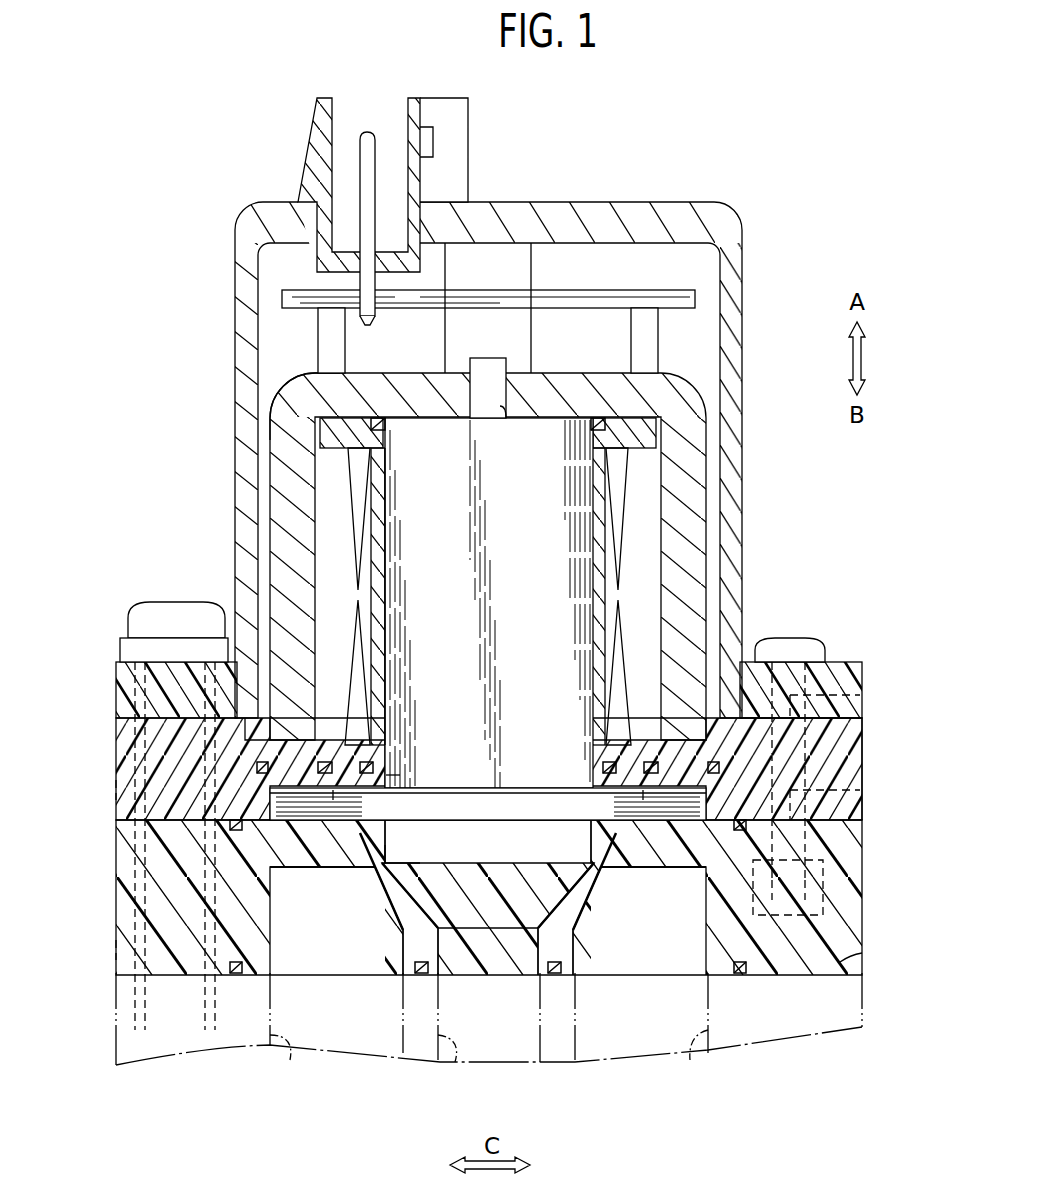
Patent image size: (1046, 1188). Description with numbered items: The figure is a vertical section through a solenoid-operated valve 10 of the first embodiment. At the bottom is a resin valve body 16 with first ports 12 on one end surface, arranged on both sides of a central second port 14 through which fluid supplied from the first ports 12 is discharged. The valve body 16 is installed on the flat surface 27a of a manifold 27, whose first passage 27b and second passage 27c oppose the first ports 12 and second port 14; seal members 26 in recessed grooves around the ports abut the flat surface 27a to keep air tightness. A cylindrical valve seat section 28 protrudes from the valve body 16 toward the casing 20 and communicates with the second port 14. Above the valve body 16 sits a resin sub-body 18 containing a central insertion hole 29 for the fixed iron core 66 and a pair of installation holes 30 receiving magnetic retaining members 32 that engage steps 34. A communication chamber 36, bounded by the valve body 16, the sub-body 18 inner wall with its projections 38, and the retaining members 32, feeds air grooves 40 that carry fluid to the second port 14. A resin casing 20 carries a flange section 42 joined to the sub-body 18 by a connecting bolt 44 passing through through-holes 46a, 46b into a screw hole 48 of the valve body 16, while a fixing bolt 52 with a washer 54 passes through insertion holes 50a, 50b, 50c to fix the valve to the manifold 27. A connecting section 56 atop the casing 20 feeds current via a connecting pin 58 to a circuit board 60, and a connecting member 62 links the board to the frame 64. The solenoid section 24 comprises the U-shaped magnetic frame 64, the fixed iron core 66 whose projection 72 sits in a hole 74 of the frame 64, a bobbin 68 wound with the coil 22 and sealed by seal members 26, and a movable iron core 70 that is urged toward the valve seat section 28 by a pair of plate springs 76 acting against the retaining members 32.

The solenoid-operated valve 10 is at (728, 101).
The first ports 12 is at (345, 960).
The second port 14 is at (492, 972).
The valve body 16 is at (852, 864).
The sub-body 18 is at (852, 780).
The casing 20 is at (742, 216).
The coil 22 is at (354, 492).
The solenoid section 24 is at (274, 397).
The seal member 26 is at (598, 418).
The manifold 27 is at (793, 1028).
The flat surface 27a is at (862, 953).
The first passage 27b is at (290, 1060).
The second passage 27c is at (455, 1062).
The valve seat section 28 is at (390, 830).
The insertion hole 29 is at (388, 778).
The installation holes 30 is at (648, 762).
The retaining members 32 is at (314, 745).
The steps 34 is at (800, 746).
The communication chamber 36 is at (552, 800).
The projections 38 is at (276, 806).
The air grooves 40 is at (374, 860).
The flange section 42 is at (116, 690).
The connecting bolt 44 is at (788, 645).
The through-hole 46a is at (862, 692).
The through-hole 46b is at (862, 795).
The screw hole 48 is at (845, 895).
The insertion hole 50a is at (122, 666).
The insertion hole 50b is at (134, 790).
The insertion hole 50c is at (136, 946).
The fixing bolt 52 is at (165, 606).
The washer 54 is at (122, 648).
The connecting section 56 is at (455, 128).
The connecting pin 58 is at (367, 130).
The circuit board 60 is at (560, 300).
The connecting member 62 is at (345, 345).
The frame 64 is at (698, 442).
The fixed iron core 66 is at (548, 550).
The bobbin 68 is at (382, 515).
The movable iron core 70 is at (490, 822).
The projection 72 is at (486, 360).
The hole 74 is at (504, 410).
The springs 76 is at (333, 795).